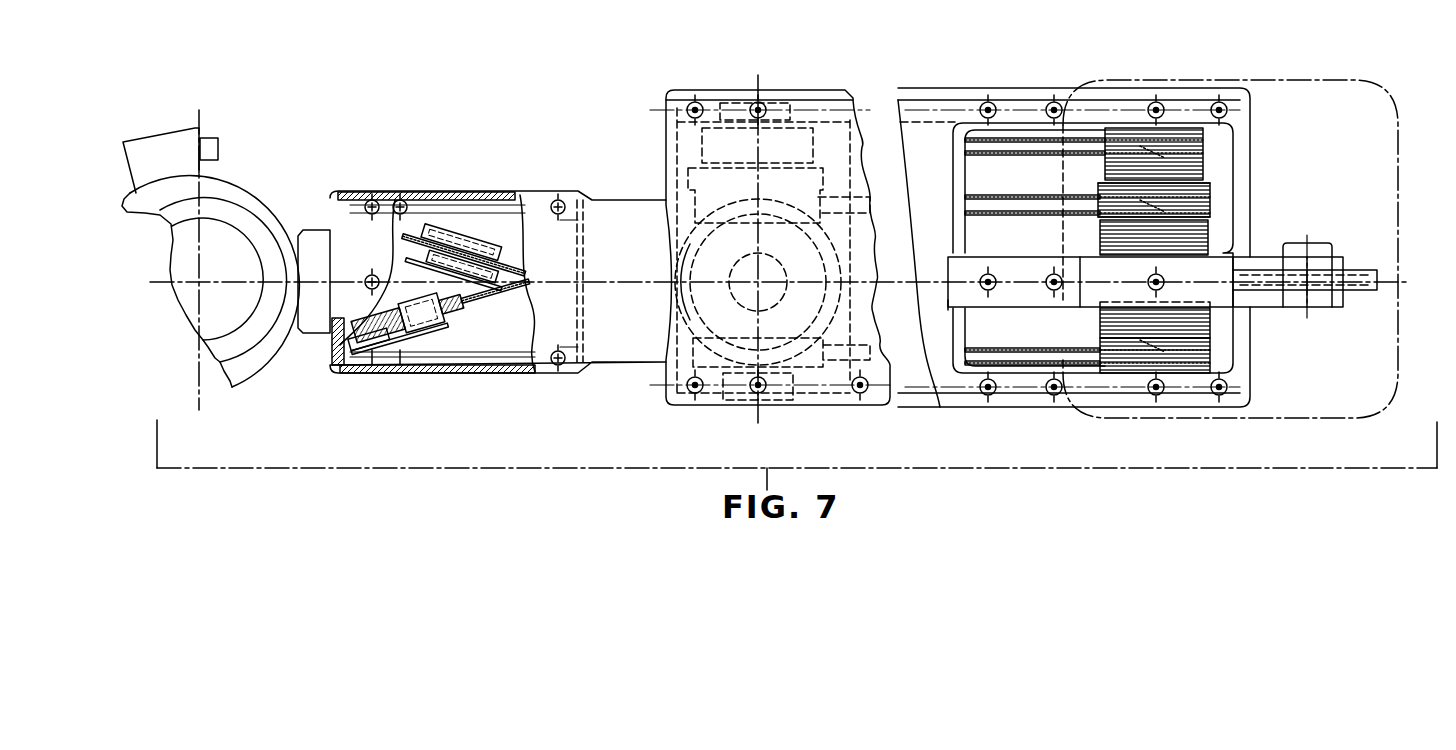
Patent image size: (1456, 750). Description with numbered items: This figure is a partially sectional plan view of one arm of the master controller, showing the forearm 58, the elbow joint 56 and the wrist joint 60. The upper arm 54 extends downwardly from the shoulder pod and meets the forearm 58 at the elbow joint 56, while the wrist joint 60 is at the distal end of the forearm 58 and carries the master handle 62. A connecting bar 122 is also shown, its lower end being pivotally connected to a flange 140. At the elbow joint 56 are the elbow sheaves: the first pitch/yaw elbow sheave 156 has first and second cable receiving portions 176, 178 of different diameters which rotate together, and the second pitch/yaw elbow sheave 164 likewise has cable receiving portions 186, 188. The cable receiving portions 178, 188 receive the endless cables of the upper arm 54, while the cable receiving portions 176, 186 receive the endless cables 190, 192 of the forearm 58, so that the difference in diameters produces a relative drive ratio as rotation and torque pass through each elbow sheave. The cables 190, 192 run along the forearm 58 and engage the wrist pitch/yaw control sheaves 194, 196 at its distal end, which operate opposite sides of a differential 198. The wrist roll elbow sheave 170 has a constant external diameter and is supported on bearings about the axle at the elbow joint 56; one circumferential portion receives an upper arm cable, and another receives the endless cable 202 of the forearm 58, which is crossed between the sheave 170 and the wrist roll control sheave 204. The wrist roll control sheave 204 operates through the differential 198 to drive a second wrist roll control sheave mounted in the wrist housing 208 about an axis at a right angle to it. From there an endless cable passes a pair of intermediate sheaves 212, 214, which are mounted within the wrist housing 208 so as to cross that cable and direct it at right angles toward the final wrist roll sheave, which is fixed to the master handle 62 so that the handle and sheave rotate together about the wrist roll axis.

The upper arm 54 is at (1257, 80).
The elbow joint 56 is at (1165, 77).
The forearm 58 is at (1000, 400).
The wrist joint 60 is at (668, 408).
The master handle 62 is at (262, 375).
The connecting bar 122 is at (1372, 272).
The flange 140 is at (1343, 303).
The first pitch/yaw elbow sheave 156 is at (1216, 184).
The second pitch/yaw elbow sheave 164 is at (1195, 375).
The wrist roll elbow sheave 170 is at (1128, 128).
The first cable receiving portion 176 is at (1208, 200).
The second cable receiving portion 178 is at (1208, 237).
The cable receiving portion 186 is at (1210, 349).
The cable receiving portion 188 is at (1210, 322).
The endless cable 190 is at (985, 195).
The endless cable 192 is at (1015, 368).
The wrist pitch/yaw control sheave 194 is at (697, 180).
The wrist pitch/yaw control sheave 196 is at (742, 370).
The differential 198 is at (788, 325).
The endless cable 202 is at (1018, 140).
The wrist roll control sheave 204 is at (787, 140).
The wrist housing 208 is at (630, 363).
The intermediate sheave 212 is at (428, 340).
The intermediate sheave 214 is at (460, 240).